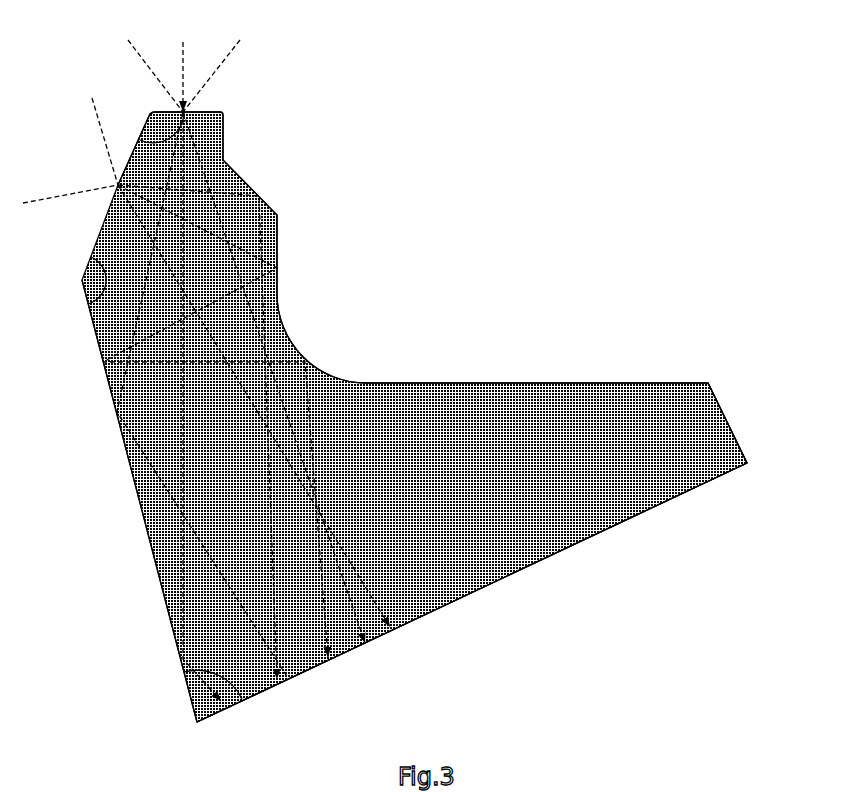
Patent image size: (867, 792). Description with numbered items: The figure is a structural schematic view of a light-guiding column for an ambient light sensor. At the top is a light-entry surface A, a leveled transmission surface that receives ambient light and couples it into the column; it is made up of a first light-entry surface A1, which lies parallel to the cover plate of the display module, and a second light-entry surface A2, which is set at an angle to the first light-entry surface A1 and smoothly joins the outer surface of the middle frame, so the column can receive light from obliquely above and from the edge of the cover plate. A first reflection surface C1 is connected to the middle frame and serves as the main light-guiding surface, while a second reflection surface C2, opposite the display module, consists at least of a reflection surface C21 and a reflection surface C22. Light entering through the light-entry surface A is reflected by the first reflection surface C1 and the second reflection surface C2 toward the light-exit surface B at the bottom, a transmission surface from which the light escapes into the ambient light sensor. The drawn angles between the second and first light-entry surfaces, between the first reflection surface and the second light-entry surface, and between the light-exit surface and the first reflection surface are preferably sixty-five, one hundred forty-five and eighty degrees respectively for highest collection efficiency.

The light-entry surface A is at (122, 166).
The first light-entry surface A1 is at (199, 359).
The second light-entry surface A2 is at (117, 183).
The first reflection surface C1 is at (132, 512).
The second reflection surface C2 is at (466, 378).
The reflection surface C21 is at (744, 430).
The reflection surface C22 is at (224, 139).
The light-exit surface B is at (482, 603).